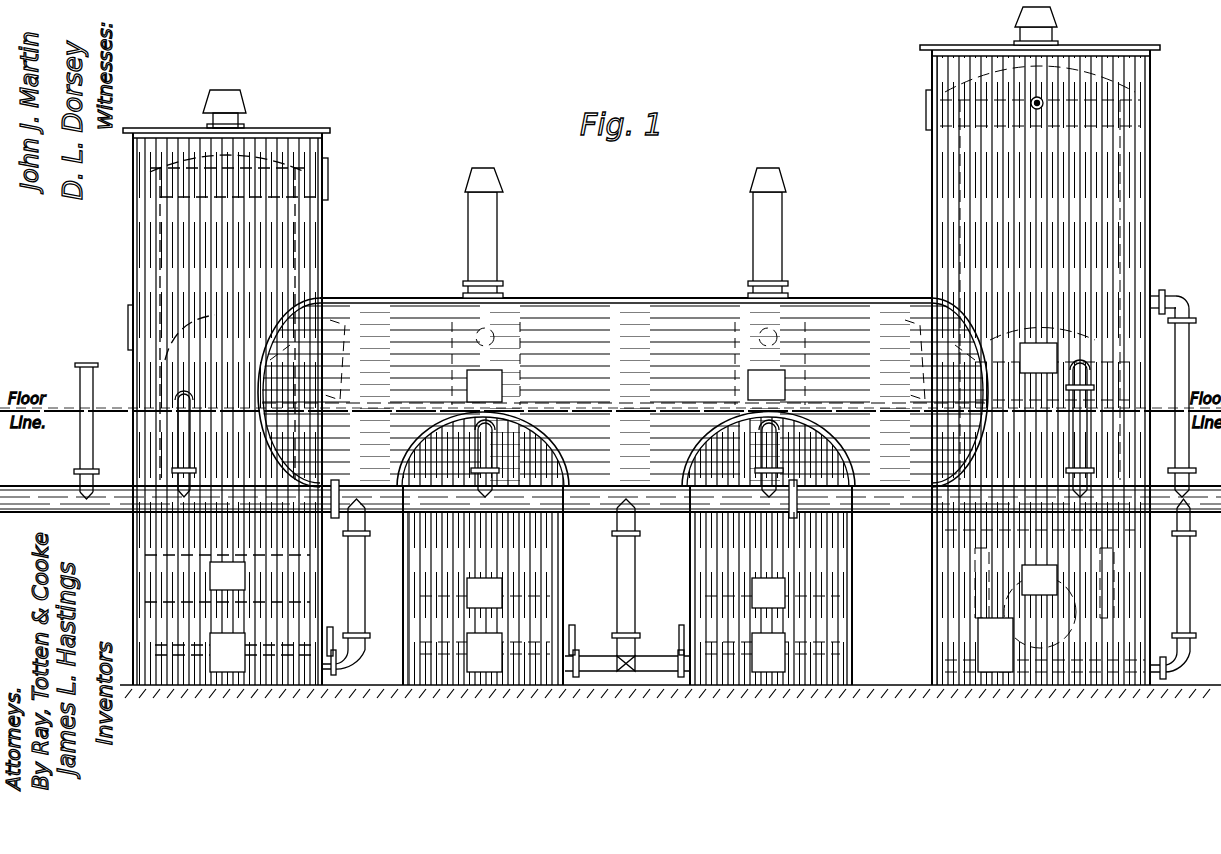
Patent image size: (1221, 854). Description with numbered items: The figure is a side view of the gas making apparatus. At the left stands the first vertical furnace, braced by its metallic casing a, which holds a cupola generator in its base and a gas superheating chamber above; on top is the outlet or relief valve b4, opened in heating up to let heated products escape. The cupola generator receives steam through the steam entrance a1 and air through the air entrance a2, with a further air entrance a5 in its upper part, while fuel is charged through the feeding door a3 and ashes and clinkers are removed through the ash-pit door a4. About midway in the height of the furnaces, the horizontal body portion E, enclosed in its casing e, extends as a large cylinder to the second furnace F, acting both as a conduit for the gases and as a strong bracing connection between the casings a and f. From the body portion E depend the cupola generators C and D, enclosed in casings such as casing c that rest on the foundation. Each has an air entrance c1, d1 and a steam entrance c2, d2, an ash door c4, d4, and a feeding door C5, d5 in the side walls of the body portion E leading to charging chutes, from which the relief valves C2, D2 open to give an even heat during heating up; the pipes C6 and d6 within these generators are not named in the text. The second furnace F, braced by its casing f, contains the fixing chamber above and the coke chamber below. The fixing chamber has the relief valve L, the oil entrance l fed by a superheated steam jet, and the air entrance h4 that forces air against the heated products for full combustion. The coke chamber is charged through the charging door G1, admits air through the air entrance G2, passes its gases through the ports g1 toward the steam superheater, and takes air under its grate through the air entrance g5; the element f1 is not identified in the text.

The casing of furnace A a is at (323, 278).
The outlet or relief valve b4 is at (203, 100).
The air entrance a5 is at (194, 467).
The feeding door a3 is at (227, 564).
The ash-pit door a4 is at (227, 652).
The steam entrance a1 is at (330, 626).
The air entrance a2 is at (362, 658).
The horizontal body portion E is at (623, 327).
The casing of the horizontal body portion e is at (385, 300).
The relief valve C2 is at (467, 183).
The relief valve D2 is at (752, 183).
The feeding door C5 is at (484, 386).
The feeding door d5 is at (766, 385).
The cupola generator C is at (477, 548).
The casing of cupola generator C c is at (403, 615).
The pipe in tank C C6 is at (476, 462).
The ash door c4 is at (484, 652).
The cupola generator D is at (768, 548).
The pipe in tank D d6 is at (760, 462).
The ash door d4 is at (768, 652).
The air entrance d1 is at (660, 660).
The air entrance c1 is at (596, 660).
The steam entrance c2 is at (576, 630).
The steam entrance d2 is at (678, 630).
The second furnace F is at (1032, 344).
The casing of furnace F f is at (931, 212).
The relief valve L is at (1058, 14).
The oil entrance l is at (1032, 100).
The charging door G1 is at (1038, 358).
The air entrance G2 is at (1072, 430).
The ports g1 is at (1039, 580).
The lower box in tank F f1 is at (1015, 636).
The air entrance h4 is at (1188, 306).
The air entrance g5 is at (1188, 658).